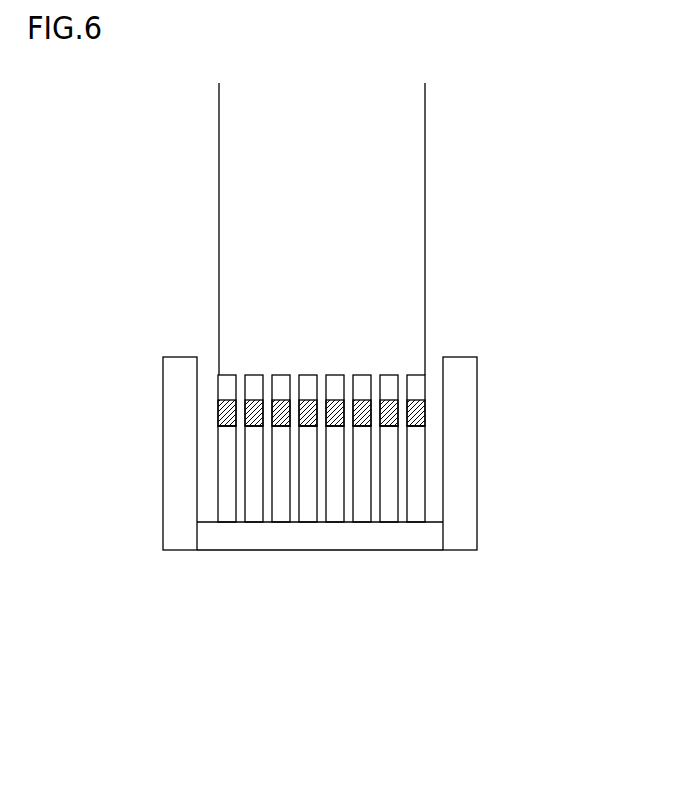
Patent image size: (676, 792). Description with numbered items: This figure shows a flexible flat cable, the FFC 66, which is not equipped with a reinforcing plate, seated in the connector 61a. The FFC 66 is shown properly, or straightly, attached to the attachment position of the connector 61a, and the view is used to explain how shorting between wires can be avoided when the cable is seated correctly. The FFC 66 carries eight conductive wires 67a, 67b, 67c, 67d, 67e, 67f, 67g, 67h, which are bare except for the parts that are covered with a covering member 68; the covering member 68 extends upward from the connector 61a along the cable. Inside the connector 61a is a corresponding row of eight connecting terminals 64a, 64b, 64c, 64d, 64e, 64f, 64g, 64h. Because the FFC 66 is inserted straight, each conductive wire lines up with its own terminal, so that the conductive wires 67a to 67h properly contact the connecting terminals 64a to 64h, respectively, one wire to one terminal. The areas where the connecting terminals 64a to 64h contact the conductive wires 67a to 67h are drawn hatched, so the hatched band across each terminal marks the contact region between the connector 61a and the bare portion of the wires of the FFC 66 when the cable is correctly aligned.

The FFC 66 is at (483, 151).
The covering member 68 is at (246, 136).
The connector 61a is at (460, 455).
The connecting terminal 64a is at (227, 401).
The connecting terminal 64b is at (254, 401).
The connecting terminal 64c is at (281, 401).
The connecting terminal 64d is at (308, 401).
The connecting terminal 64e is at (335, 401).
The connecting terminal 64f is at (362, 401).
The connecting terminal 64g is at (389, 401).
The connecting terminal 64h is at (416, 401).
The conductive wire 67a is at (227, 458).
The conductive wire 67b is at (254, 458).
The conductive wire 67c is at (281, 458).
The conductive wire 67d is at (308, 458).
The conductive wire 67e is at (335, 458).
The conductive wire 67f is at (362, 458).
The conductive wire 67g is at (389, 458).
The conductive wire 67h is at (416, 458).